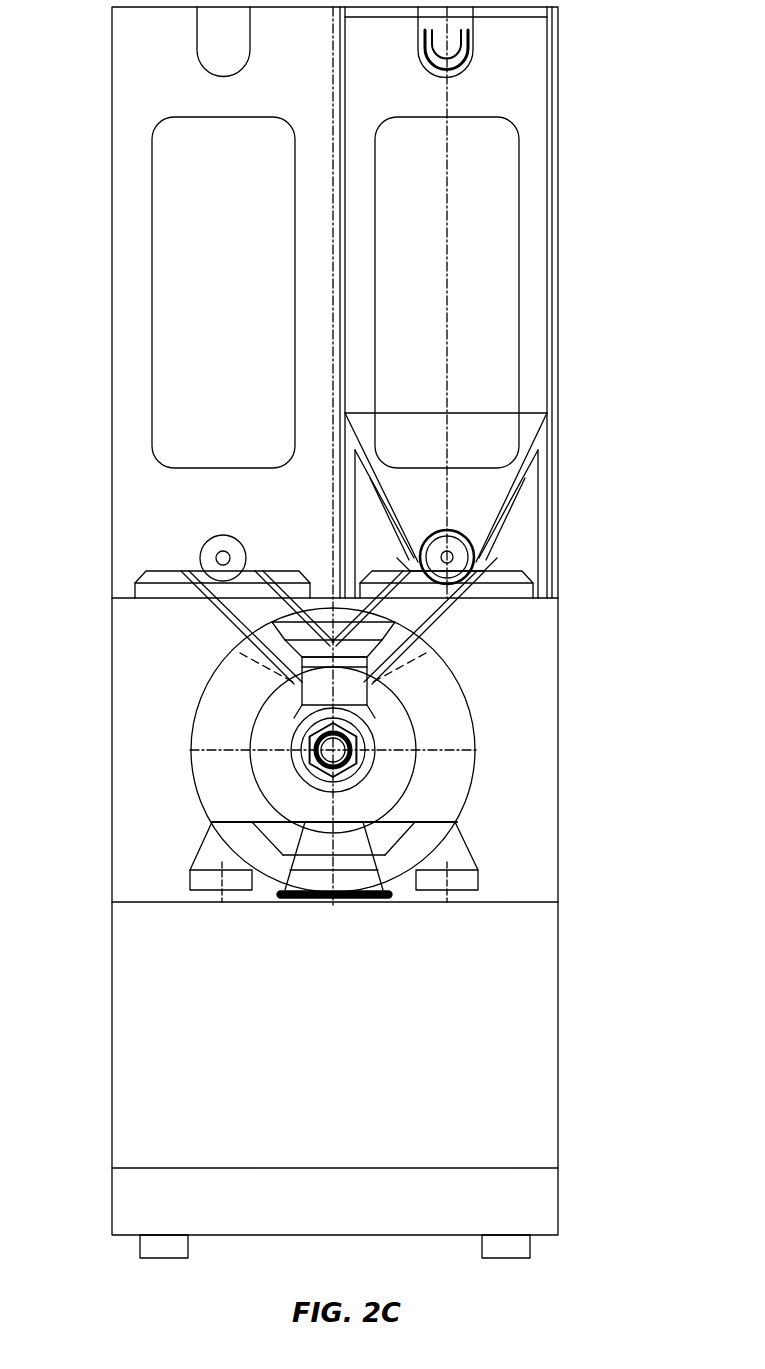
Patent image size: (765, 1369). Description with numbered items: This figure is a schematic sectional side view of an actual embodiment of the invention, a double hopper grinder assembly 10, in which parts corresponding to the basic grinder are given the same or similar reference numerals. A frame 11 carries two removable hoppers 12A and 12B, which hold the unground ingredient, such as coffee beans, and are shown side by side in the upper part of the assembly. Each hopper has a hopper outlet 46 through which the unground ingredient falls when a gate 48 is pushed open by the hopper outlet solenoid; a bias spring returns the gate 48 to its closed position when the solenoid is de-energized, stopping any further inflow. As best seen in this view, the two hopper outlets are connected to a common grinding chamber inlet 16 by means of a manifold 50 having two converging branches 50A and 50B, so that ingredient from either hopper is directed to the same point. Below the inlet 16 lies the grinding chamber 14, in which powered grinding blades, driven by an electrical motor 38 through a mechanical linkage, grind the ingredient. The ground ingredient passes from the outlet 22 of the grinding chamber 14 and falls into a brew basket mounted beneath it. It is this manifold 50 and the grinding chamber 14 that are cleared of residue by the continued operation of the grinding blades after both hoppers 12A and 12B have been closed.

The grinder assembly 10 is at (558, 136).
The frame 11 is at (558, 64).
The removable hopper 12A is at (500, 240).
The removable hopper 12B is at (163, 197).
The grinding chamber 14 is at (395, 768).
The grinding chamber inlet 16 is at (358, 715).
The outlet 22 is at (352, 898).
The electrical motor 38 is at (453, 685).
The hopper outlet 46 is at (472, 540).
The gate 48 is at (493, 560).
The manifold 50 is at (317, 678).
The manifold branch 50A is at (423, 608).
The manifold branch 50B is at (222, 613).